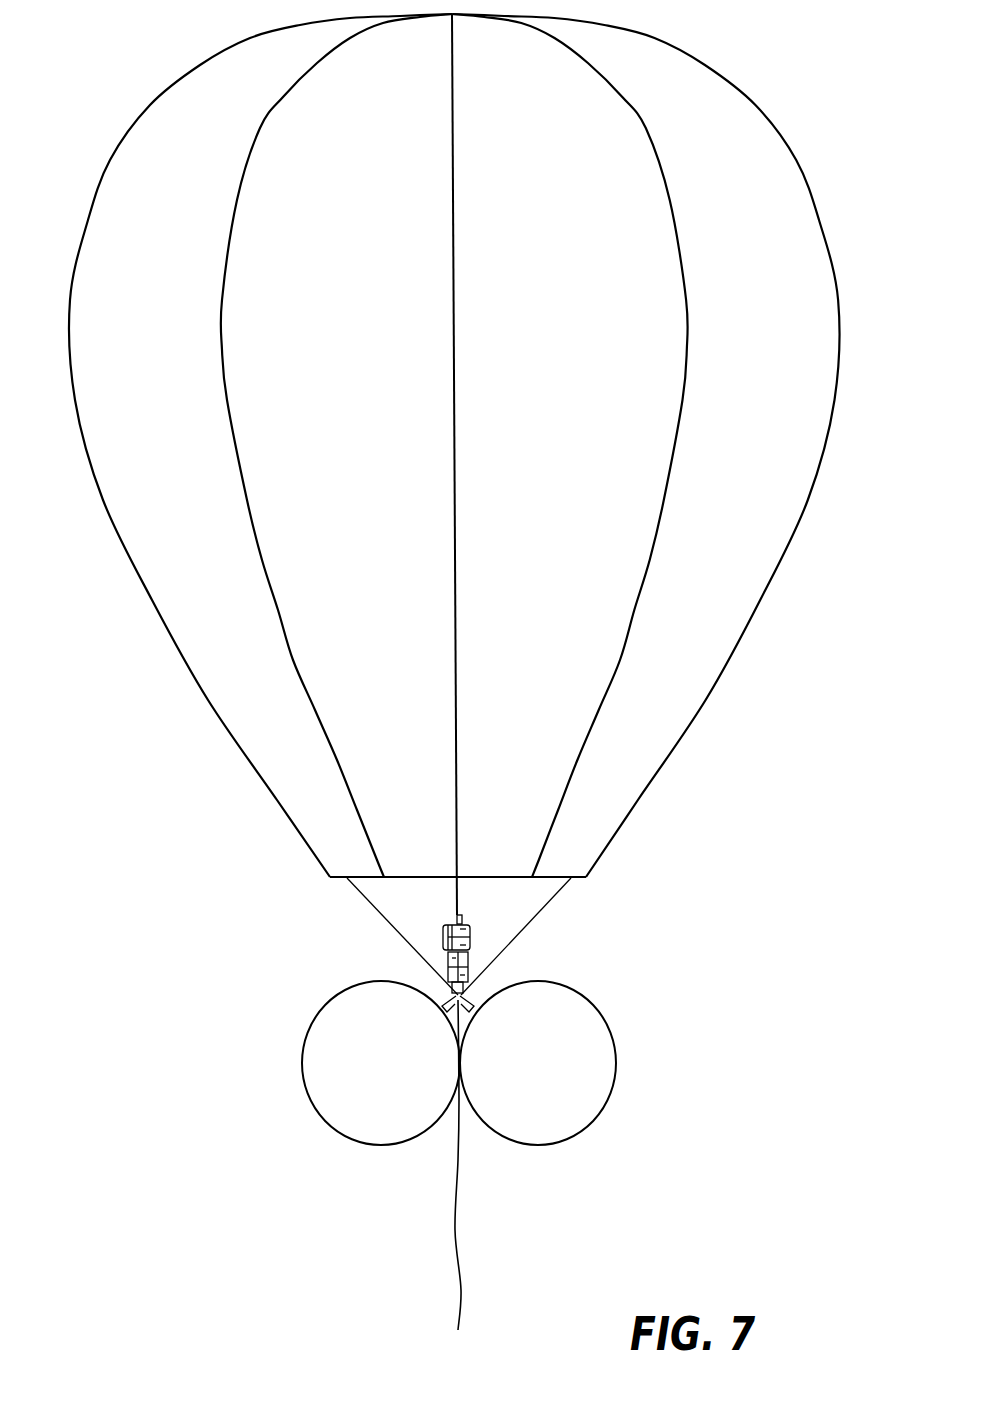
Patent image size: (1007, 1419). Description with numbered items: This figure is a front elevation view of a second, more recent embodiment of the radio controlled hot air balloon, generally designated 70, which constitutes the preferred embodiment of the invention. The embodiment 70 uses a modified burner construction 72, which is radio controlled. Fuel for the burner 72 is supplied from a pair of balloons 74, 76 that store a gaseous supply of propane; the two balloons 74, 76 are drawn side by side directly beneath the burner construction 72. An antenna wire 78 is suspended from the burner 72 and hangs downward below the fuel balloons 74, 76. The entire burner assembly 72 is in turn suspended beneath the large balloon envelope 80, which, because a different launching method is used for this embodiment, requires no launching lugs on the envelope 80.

The radio controlled hot air balloon 70 is at (463, 672).
The burner construction 72 is at (470, 933).
The balloon 74 is at (315, 1105).
The balloon 76 is at (616, 1088).
The antenna wire 78 is at (457, 1233).
The balloon envelope 80 is at (770, 588).